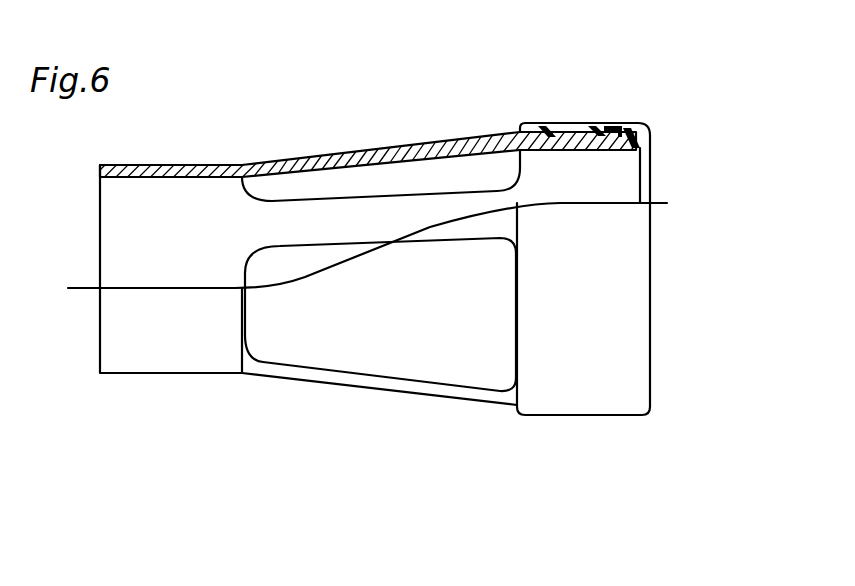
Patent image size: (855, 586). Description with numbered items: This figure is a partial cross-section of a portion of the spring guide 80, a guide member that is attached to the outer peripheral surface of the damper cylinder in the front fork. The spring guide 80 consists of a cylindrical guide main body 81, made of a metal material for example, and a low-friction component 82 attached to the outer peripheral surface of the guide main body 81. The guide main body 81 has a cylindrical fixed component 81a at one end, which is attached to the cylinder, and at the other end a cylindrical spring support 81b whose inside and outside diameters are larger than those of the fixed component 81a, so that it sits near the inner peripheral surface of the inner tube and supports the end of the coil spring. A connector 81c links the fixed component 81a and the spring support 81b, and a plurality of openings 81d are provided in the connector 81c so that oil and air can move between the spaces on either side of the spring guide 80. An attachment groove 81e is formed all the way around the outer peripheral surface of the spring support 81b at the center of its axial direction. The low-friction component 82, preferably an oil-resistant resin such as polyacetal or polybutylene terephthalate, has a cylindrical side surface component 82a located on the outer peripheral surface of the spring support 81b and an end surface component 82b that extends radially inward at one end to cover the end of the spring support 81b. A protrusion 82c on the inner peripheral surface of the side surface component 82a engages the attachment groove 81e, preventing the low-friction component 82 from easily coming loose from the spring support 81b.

The spring guide 80 is at (676, 82).
The guide main body 81 is at (288, 150).
The fixed component 81a is at (163, 357).
The spring support 81b is at (637, 150).
The connector 81c is at (323, 375).
The openings 81d is at (390, 372).
The attachment groove 81e is at (600, 127).
The low-friction component 82 is at (560, 107).
The side surface component 82a is at (578, 127).
The end surface component 82b is at (642, 140).
The protrusion 82c is at (550, 128).